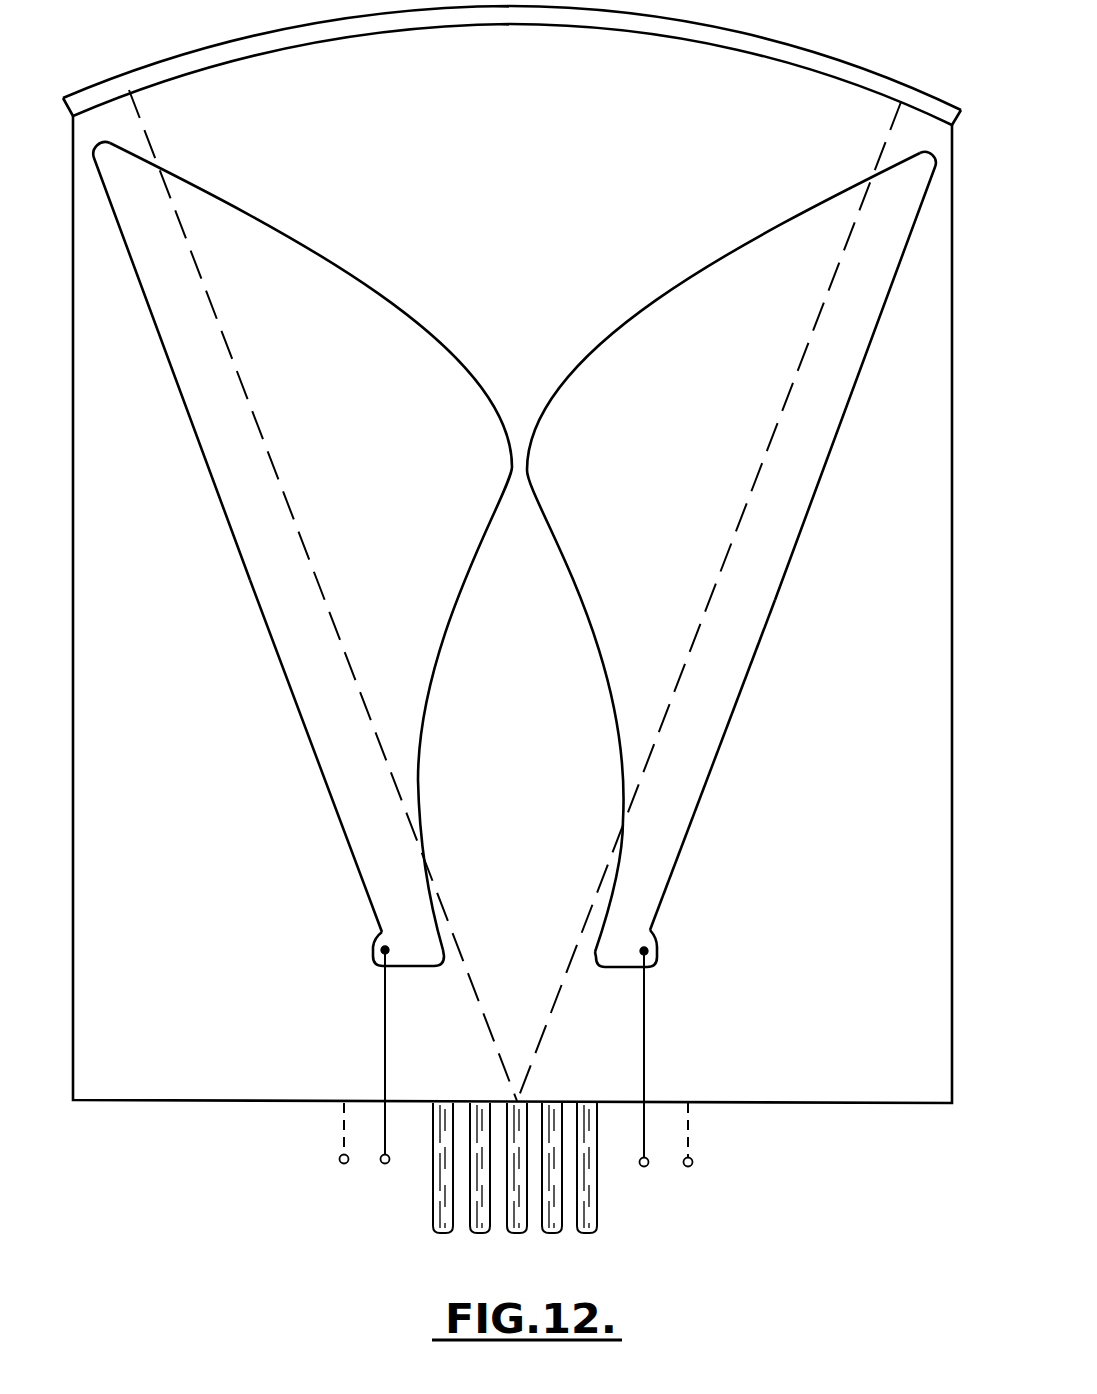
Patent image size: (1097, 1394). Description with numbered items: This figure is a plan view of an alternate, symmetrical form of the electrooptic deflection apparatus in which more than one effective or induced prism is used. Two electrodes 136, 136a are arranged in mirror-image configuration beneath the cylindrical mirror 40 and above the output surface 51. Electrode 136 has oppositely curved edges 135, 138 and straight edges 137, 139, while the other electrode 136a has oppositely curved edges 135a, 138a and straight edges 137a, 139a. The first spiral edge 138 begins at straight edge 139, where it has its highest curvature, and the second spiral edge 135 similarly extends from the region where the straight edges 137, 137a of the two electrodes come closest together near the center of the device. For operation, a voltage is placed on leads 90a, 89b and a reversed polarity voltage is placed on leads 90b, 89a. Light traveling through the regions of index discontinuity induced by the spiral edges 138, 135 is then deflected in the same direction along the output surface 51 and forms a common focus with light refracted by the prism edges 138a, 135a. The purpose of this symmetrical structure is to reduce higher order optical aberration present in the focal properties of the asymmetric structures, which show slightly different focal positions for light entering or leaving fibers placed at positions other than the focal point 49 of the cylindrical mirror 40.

The cylindrical mirror 40 is at (794, 40).
The output surface 51 is at (836, 1104).
The focal point 49 is at (517, 1096).
The curved edge 135 is at (396, 308).
The curved edge 135a is at (644, 309).
The electrode 136 is at (305, 638).
The electrode 136a is at (717, 642).
The straight edge 137 is at (346, 840).
The straight edge 137a is at (680, 853).
The spiral edge 138 is at (485, 532).
The spiral edge 138a is at (555, 537).
The straight edge 139 is at (420, 966).
The straight edge 139a is at (618, 968).
The lead 89a is at (643, 1167).
The lead 89b is at (690, 1131).
The lead 90a is at (385, 1164).
The lead 90b is at (344, 1130).